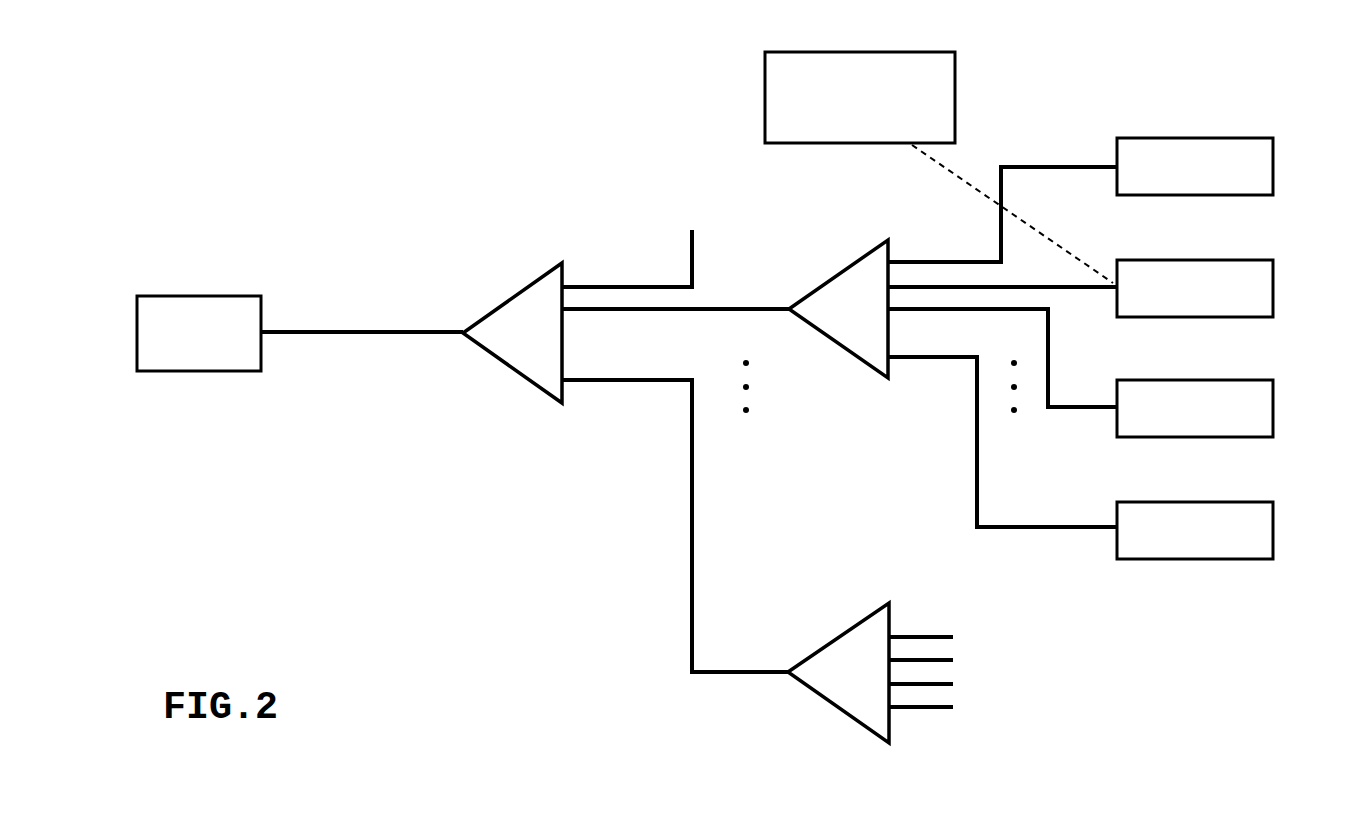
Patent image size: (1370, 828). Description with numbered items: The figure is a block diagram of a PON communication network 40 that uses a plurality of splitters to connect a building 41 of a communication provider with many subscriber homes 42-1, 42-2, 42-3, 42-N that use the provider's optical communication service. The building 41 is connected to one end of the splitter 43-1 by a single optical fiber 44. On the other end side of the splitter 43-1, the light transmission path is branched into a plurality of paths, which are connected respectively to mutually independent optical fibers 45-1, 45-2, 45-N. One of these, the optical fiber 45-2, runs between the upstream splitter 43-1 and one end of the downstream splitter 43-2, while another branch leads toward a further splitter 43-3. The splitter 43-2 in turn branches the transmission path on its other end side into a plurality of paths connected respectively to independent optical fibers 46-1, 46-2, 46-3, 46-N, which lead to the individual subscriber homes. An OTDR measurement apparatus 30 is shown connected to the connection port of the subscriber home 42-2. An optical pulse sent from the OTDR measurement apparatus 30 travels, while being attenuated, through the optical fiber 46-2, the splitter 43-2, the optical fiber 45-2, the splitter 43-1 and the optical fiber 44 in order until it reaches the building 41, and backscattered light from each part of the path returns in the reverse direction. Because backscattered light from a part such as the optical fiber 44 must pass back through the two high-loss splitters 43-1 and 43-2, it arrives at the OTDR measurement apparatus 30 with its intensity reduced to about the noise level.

The OTDR measurement apparatus 30 is at (870, 50).
The PON communication network 40 is at (504, 522).
The building 41 is at (188, 296).
The subscriber home 42-1 is at (1275, 170).
The subscriber home 42-2 is at (1275, 291).
The subscriber home 42-3 is at (1275, 410).
The subscriber home 42-N is at (1275, 530).
The splitter 43-1 is at (512, 296).
The splitter 43-2 is at (838, 272).
The splitter 43-3 is at (838, 636).
The optical fiber 44 is at (362, 331).
The optical fiber 45-1 is at (601, 285).
The optical fiber 45-2 is at (646, 308).
The optical fiber 45-N is at (602, 383).
The optical fiber 46-1 is at (1061, 165).
The optical fiber 46-2 is at (946, 285).
The optical fiber 46-3 is at (1086, 405).
The optical fiber 46-N is at (1062, 525).